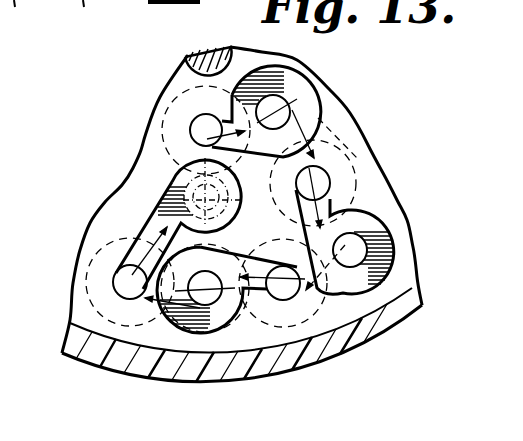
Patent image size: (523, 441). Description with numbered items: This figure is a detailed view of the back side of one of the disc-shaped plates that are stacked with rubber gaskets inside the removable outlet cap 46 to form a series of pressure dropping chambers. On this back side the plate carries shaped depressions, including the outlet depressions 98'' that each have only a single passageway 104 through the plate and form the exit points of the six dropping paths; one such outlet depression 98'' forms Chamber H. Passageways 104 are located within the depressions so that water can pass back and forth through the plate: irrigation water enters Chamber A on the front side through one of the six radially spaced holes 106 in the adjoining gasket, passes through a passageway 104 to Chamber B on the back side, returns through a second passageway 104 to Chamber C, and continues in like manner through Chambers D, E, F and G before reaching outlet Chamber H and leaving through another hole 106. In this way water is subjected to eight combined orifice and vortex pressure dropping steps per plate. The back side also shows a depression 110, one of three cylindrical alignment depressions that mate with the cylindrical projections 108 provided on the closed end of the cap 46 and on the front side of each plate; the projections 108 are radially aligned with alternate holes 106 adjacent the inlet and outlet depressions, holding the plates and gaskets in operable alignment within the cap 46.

The outlet cap 46 is at (220, 368).
The outlet depression 98'' is at (162, 176).
The passageway 104 is at (258, 94).
The hole 106 is at (110, 230).
The projection 108 is at (195, 58).
The depression 110 is at (225, 45).
The Chamber A is at (178, 115).
The Chamber B is at (305, 95).
The Chamber C is at (349, 174).
The Chamber D is at (371, 279).
The Chamber E is at (280, 313).
The Chamber F is at (193, 327).
The Chamber G is at (98, 278).
The Chamber H is at (172, 181).